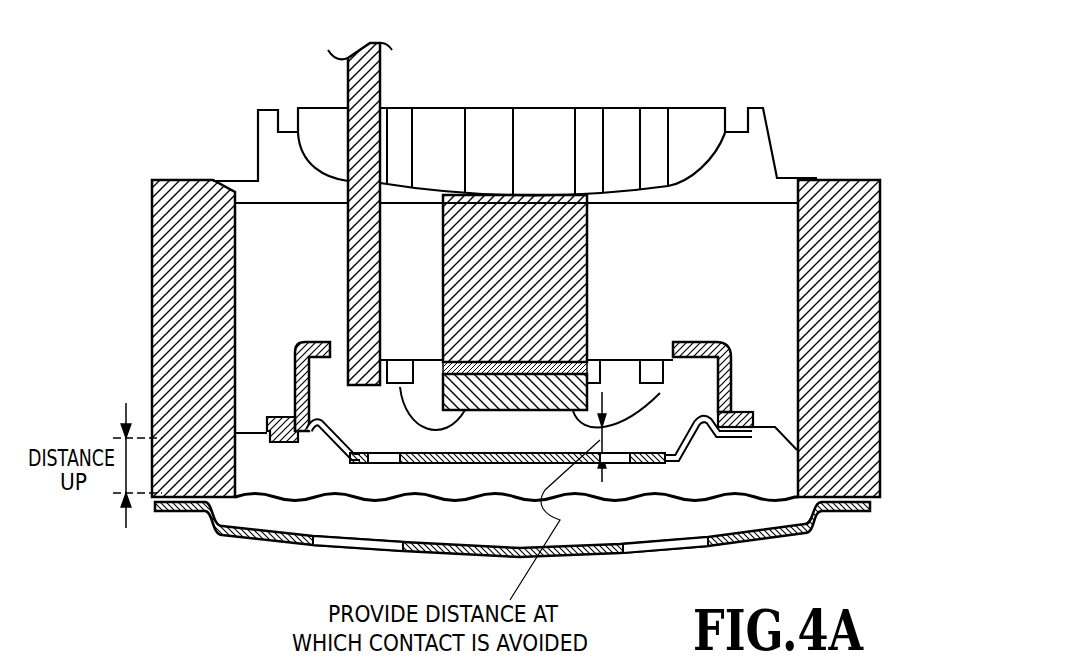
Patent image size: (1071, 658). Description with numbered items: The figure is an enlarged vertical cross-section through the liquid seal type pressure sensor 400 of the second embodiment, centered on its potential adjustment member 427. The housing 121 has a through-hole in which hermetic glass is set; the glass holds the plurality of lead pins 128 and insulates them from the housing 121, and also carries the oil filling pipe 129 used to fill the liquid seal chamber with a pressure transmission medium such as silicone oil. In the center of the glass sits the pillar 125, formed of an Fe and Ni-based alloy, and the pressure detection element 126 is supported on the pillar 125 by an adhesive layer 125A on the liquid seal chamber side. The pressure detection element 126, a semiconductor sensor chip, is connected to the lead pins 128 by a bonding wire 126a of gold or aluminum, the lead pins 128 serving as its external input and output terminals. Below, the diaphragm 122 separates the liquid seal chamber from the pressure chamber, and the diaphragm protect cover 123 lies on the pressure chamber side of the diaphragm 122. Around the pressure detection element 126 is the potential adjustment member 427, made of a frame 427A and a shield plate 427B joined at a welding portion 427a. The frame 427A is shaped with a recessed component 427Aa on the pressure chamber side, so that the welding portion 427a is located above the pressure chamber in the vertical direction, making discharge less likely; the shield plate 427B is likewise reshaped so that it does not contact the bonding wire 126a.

The housing 121 is at (176, 207).
The lead pins 128 is at (653, 107).
The oil filling pipe 129 is at (481, 112).
The liquid seal type pressure sensor 400 is at (723, 70).
The pillar 125 is at (583, 270).
The adhesive layer 125A is at (578, 363).
The frame 427A is at (293, 363).
The recessed component 427Aa is at (293, 378).
The welding portion 427a is at (287, 433).
The potential adjustment member 427 is at (740, 345).
The bonding wire 126a is at (733, 371).
The shield plate 427B is at (353, 458).
The pressure detection element 126 is at (498, 458).
The diaphragm 122 is at (757, 505).
The diaphragm protect cover 123 is at (587, 550).